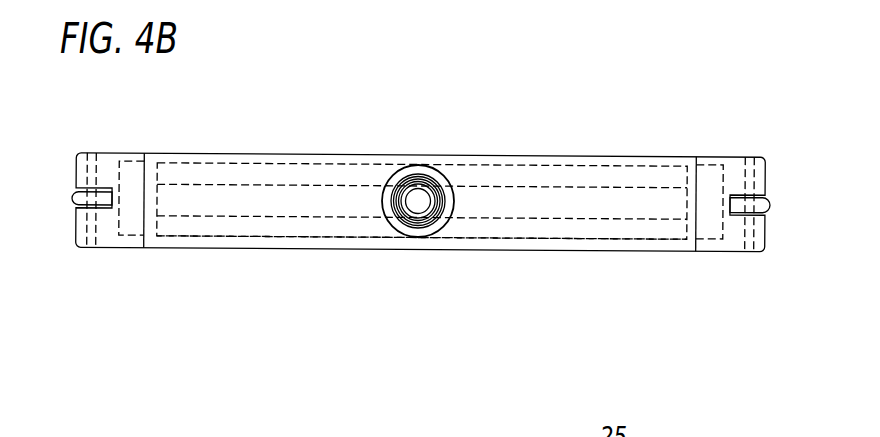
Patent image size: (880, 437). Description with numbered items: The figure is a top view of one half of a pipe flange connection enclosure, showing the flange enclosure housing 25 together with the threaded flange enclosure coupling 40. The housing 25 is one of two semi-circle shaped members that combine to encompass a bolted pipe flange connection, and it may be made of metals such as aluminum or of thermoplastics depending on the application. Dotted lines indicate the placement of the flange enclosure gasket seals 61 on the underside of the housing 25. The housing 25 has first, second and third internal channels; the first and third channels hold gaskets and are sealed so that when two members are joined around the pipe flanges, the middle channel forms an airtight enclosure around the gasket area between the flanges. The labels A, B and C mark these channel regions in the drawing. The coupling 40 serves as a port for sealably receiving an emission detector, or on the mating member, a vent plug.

The flange enclosure housing 25 is at (222, 257).
The threaded flange enclosure coupling 40 is at (431, 156).
The flange enclosure gasket seals 61 is at (235, 223).
The region A is at (608, 177).
The region B is at (633, 203).
The region C is at (618, 233).